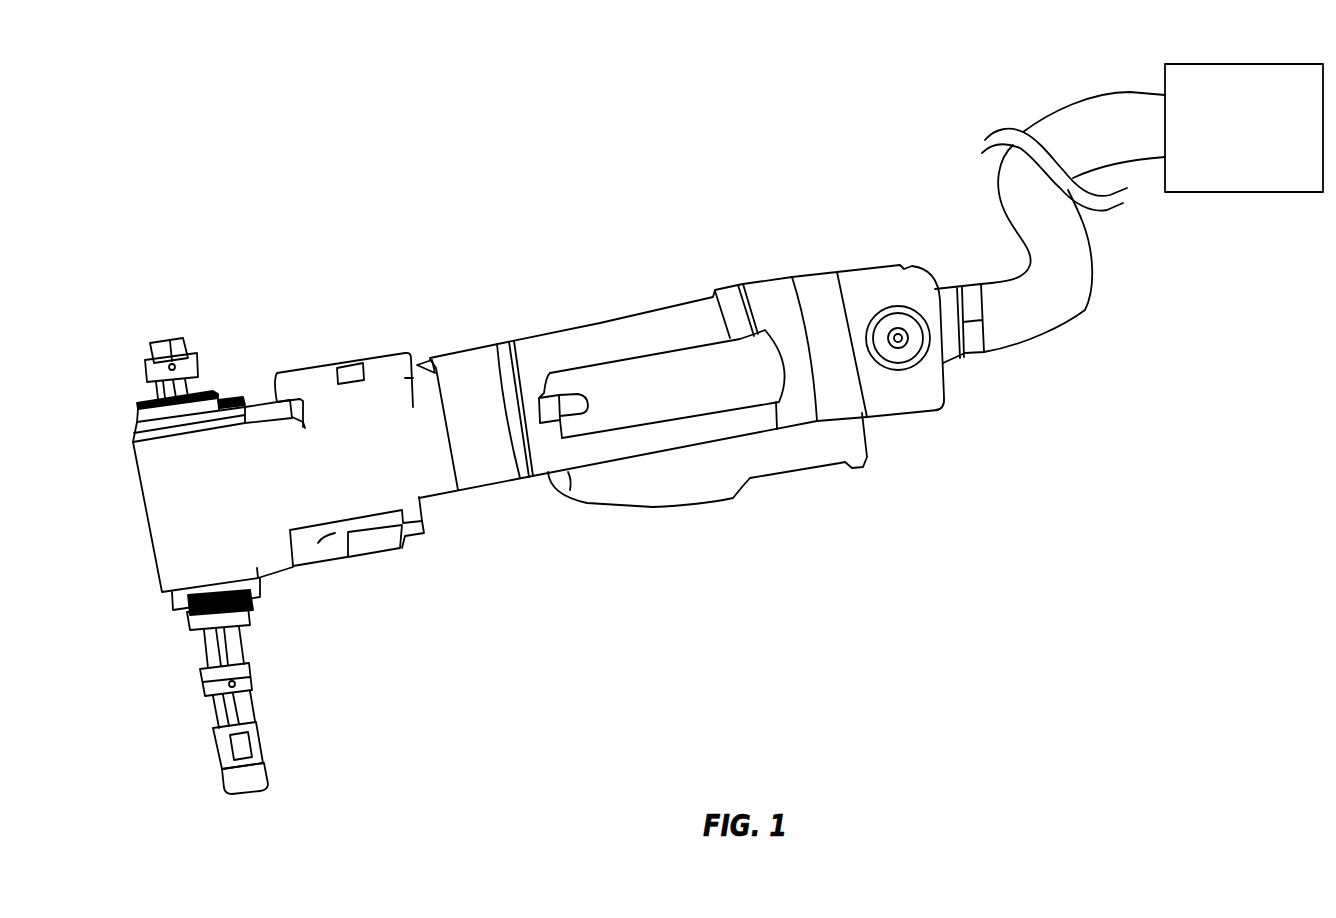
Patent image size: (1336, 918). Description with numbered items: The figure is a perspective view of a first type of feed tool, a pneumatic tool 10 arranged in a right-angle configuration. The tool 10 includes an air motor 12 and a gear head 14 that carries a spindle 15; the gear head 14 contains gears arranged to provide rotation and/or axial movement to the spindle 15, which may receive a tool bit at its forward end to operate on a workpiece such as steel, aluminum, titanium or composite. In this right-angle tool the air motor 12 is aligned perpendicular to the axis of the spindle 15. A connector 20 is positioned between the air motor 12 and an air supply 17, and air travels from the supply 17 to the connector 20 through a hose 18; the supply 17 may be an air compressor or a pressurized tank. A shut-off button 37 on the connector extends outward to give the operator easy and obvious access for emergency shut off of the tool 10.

The pneumatic tool 10 is at (562, 222).
The air motor 12 is at (645, 437).
The gear head 14 is at (322, 367).
The spindle 15 is at (182, 342).
The air supply 17 is at (1187, 87).
The hose 18 is at (1055, 293).
The connector 20 is at (866, 288).
The shut-off button 37 is at (917, 352).